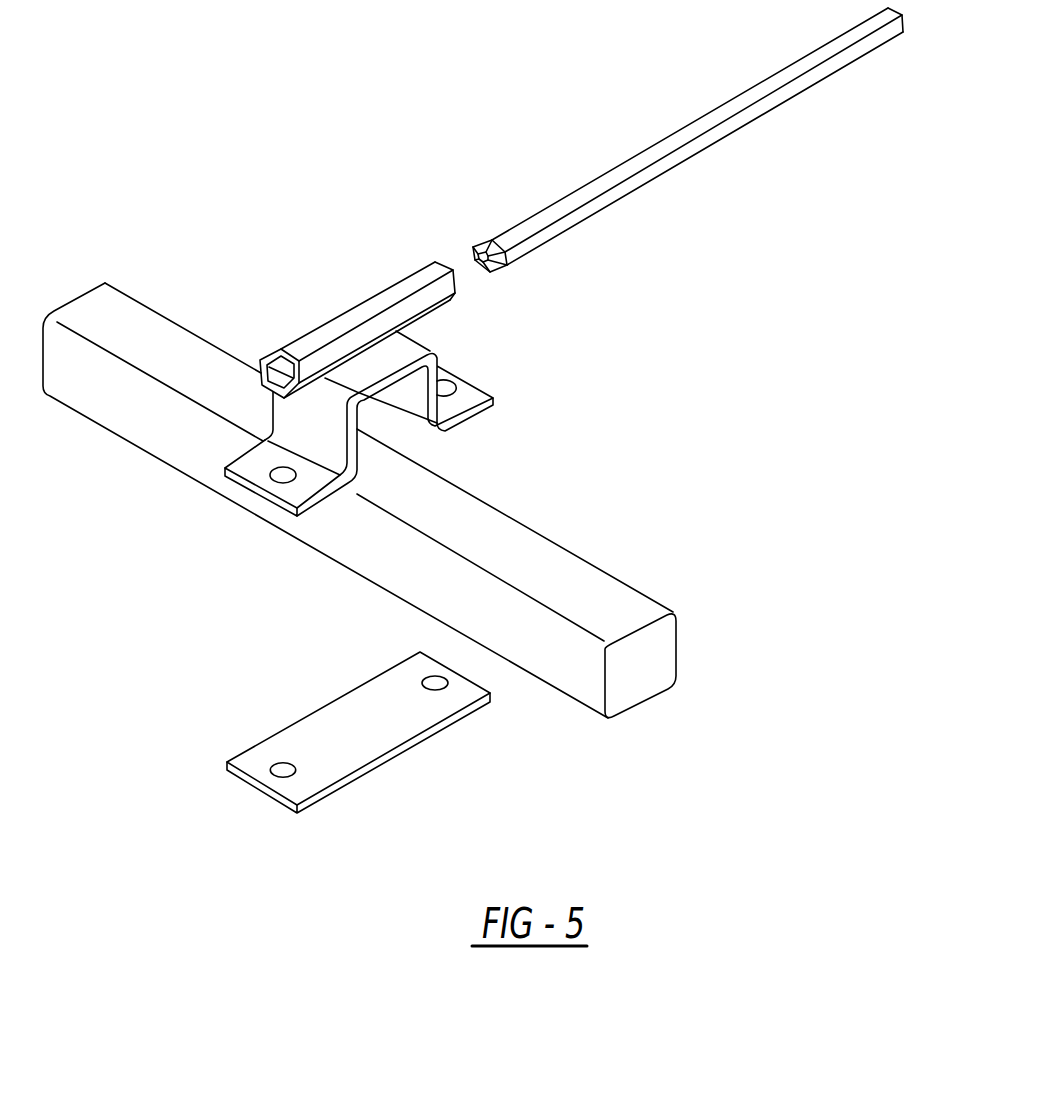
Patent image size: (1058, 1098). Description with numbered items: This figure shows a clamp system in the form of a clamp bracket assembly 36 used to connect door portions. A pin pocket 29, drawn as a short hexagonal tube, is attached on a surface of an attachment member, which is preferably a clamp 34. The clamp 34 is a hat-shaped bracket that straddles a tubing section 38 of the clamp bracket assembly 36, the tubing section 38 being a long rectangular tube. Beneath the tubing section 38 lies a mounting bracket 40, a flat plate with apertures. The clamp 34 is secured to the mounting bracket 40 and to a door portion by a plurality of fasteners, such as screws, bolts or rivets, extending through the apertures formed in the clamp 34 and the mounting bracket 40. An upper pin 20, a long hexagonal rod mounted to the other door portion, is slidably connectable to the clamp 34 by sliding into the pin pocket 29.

The upper pin 20 is at (755, 92).
The pin pocket 29 is at (372, 307).
The clamp 34 is at (258, 468).
The clamp bracket assembly 36 is at (398, 455).
The tubing section 38 is at (657, 655).
The mounting bracket 40 is at (367, 743).